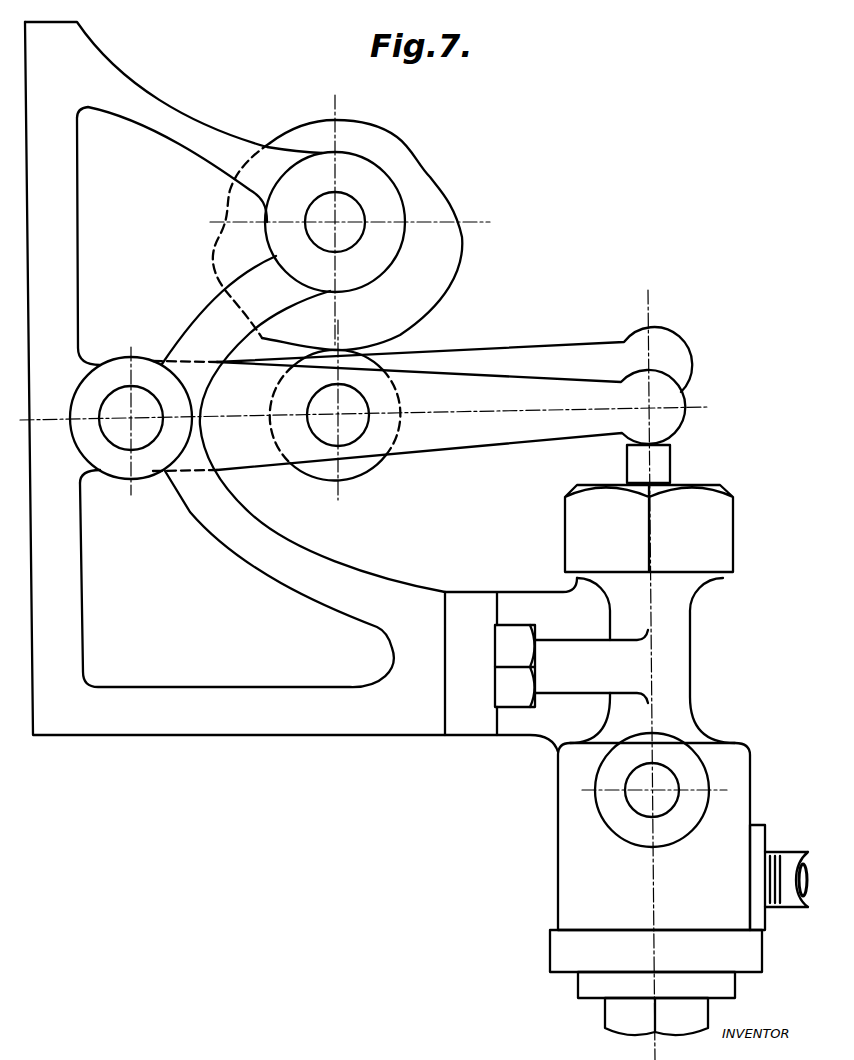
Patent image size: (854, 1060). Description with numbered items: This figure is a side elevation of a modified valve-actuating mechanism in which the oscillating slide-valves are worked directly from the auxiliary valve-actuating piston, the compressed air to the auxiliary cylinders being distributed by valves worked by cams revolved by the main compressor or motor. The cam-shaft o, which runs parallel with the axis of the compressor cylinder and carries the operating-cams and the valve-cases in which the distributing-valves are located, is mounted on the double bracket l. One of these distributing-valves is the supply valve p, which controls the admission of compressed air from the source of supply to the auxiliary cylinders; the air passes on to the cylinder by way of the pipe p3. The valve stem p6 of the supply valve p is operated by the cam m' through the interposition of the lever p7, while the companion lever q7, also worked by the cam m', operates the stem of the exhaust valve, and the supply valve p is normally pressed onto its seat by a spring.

The double bracket l is at (143, 104).
The cam-shaft o is at (348, 240).
The cam m' is at (355, 300).
The lever q7 is at (573, 352).
The lever p7 is at (610, 427).
The valve stem p6 is at (658, 462).
The supply valve p is at (651, 760).
The pipe p3 is at (686, 826).